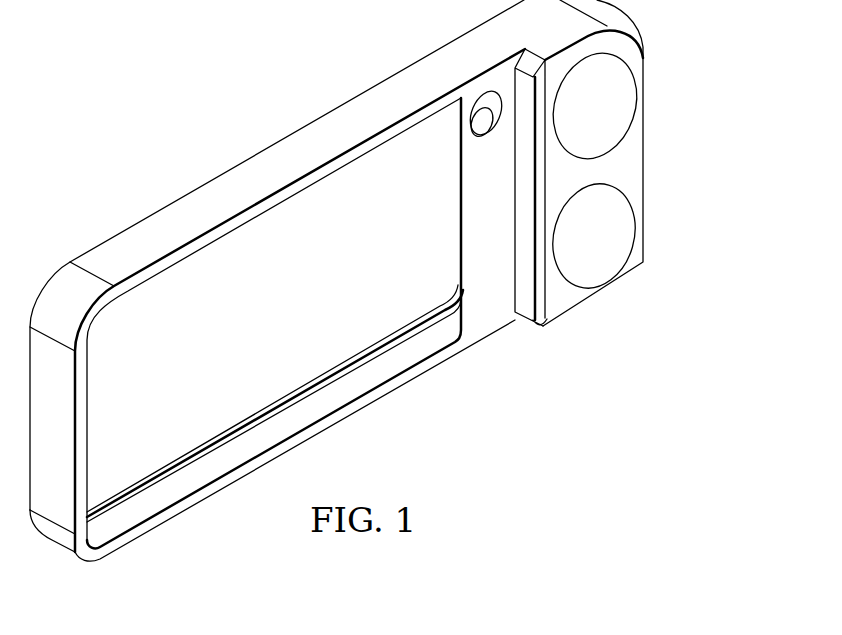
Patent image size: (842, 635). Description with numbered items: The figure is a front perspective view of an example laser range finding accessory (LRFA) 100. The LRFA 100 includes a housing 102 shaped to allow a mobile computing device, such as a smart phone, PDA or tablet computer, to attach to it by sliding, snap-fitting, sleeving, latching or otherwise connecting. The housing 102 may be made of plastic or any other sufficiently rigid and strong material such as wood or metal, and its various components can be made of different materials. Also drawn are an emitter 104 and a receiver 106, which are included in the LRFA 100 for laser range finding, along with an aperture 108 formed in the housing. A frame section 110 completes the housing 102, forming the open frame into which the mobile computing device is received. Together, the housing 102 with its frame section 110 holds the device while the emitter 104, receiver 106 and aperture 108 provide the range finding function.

The laser range finding accessory 100 is at (270, 66).
The housing 102 is at (627, 176).
The emitter 104 is at (623, 84).
The receiver 106 is at (623, 219).
The aperture 108 is at (486, 134).
The frame section 110 is at (247, 446).